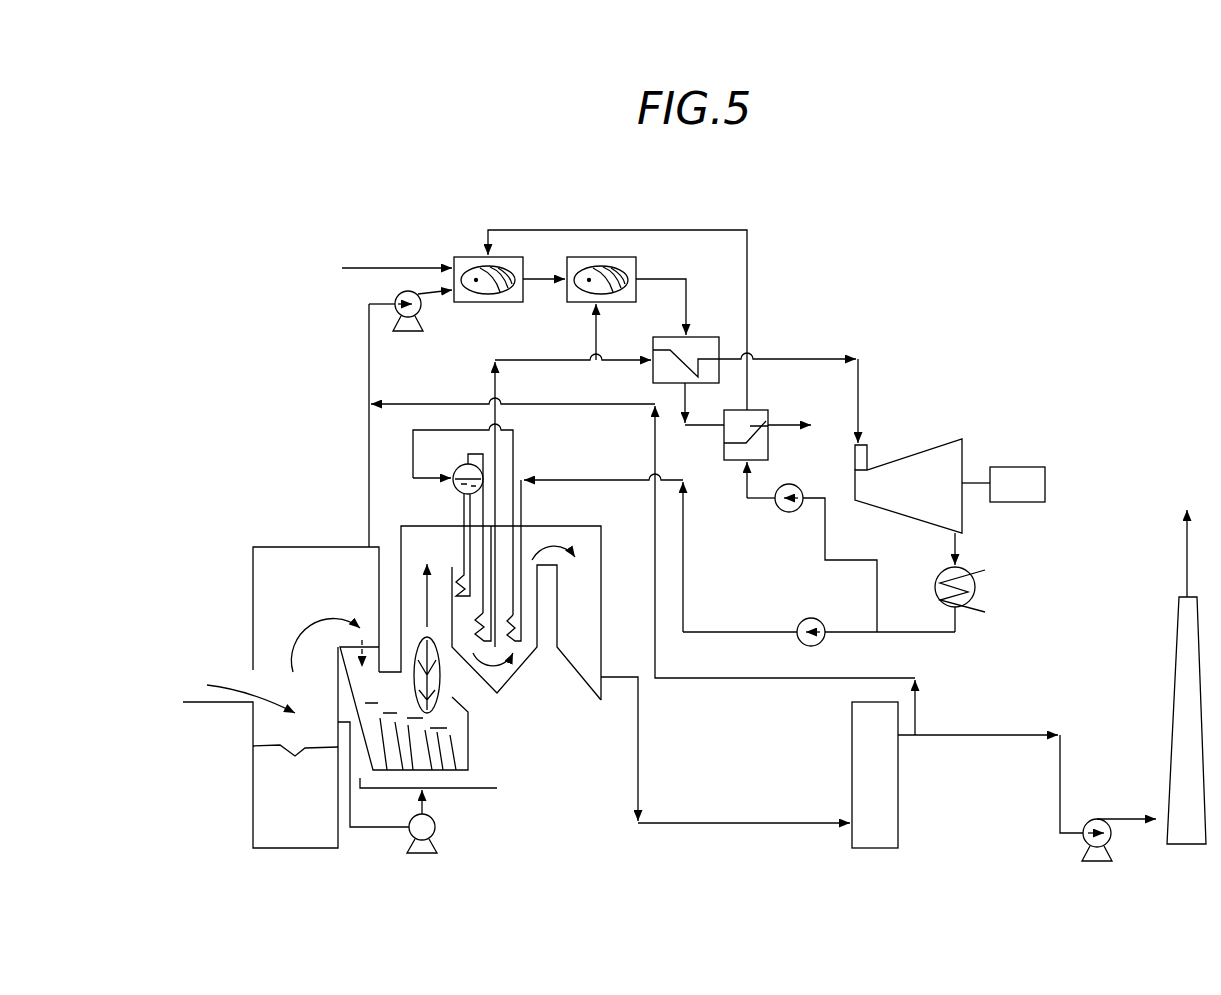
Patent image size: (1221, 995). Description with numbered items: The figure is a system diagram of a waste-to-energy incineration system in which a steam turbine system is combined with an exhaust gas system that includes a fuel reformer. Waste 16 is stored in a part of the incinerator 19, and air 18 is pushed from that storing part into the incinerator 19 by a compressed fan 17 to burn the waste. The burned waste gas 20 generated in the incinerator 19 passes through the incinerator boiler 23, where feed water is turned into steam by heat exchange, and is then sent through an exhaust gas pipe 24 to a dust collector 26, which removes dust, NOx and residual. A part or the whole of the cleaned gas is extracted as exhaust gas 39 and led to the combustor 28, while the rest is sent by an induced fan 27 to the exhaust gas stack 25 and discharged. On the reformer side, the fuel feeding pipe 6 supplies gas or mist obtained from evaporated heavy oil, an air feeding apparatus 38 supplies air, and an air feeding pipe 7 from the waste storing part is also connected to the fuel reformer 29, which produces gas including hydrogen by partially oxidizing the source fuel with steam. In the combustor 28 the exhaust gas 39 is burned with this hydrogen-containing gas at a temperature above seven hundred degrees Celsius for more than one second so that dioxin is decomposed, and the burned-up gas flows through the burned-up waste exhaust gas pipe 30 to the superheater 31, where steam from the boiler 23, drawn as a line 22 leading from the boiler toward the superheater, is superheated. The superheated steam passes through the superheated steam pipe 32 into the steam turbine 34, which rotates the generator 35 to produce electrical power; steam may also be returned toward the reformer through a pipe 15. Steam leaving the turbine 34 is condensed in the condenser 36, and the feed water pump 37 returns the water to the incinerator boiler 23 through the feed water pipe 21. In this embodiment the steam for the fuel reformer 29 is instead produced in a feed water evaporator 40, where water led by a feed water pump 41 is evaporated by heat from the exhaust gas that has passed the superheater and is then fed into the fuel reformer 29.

The fuel feeding pipe 6 is at (412, 262).
The air feeding pipe 7 is at (369, 410).
The pipe 15 is at (748, 265).
The waste 16 is at (223, 685).
The compressed fan 17 is at (436, 833).
The air 18 is at (426, 797).
The incinerator 19 is at (463, 735).
The burned waste gas 20 is at (420, 553).
The feed water pipe 21 is at (688, 572).
The steam line 22 is at (530, 358).
The incinerator boiler 23 is at (462, 512).
The exhaust gas pipe 24 is at (765, 822).
The exhaust gas stack 25 is at (1178, 702).
The dust collector 26 is at (900, 830).
The induced fan 27 is at (1110, 837).
The combustor 28 is at (612, 255).
The fuel reformer 29 is at (458, 255).
The burned-up waste exhaust gas pipe 30 is at (650, 272).
The superheater 31 is at (708, 335).
The superheated steam pipe 32 is at (782, 357).
The steam turbine 34 is at (926, 452).
The generator 35 is at (1012, 470).
The condenser 36 is at (983, 580).
The feed water pump 37 is at (815, 618).
The air feeding apparatus 38 is at (427, 308).
The exhaust gas 39 is at (655, 462).
The feed water evaporator 40 is at (774, 428).
The feed water pump 41 is at (785, 520).